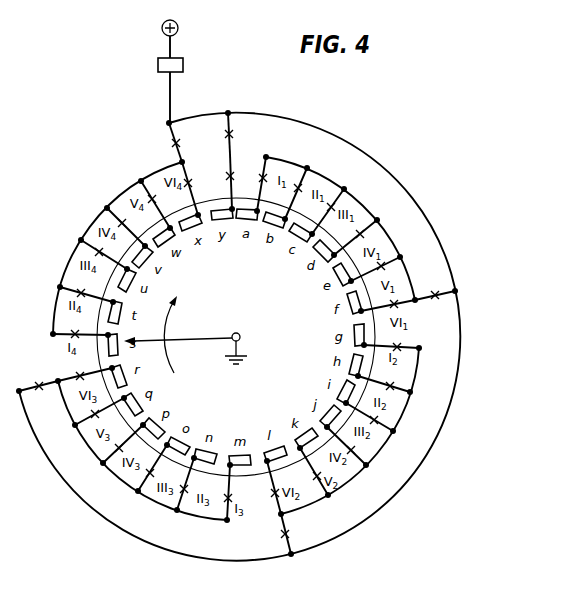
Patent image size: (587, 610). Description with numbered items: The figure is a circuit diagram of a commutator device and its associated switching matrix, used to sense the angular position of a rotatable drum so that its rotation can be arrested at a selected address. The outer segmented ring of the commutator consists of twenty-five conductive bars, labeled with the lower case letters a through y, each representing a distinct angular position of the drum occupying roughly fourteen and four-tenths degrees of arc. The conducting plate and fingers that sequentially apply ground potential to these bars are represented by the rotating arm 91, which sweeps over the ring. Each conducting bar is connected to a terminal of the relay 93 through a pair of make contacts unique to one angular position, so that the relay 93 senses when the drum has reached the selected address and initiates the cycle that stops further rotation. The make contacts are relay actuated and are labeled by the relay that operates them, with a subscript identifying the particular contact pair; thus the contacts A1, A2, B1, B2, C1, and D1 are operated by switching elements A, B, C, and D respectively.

The relay 93 is at (158, 66).
The rotating arm 91 is at (200, 339).
The make contacts A1 is at (436, 305).
The make contacts A2 is at (241, 132).
The make contacts B1 is at (296, 535).
The make contacts B2 is at (221, 169).
The make contacts C1 is at (37, 395).
The make contacts D1 is at (185, 141).